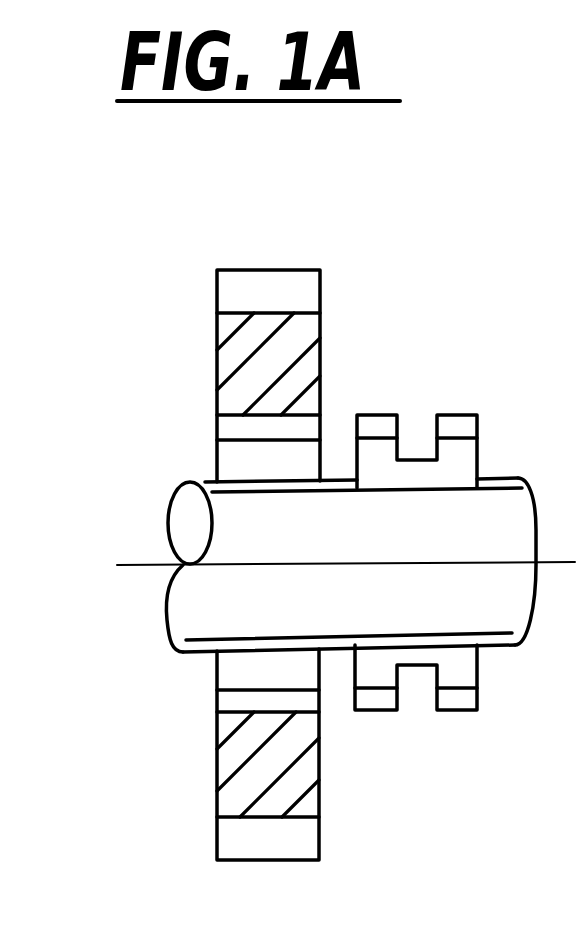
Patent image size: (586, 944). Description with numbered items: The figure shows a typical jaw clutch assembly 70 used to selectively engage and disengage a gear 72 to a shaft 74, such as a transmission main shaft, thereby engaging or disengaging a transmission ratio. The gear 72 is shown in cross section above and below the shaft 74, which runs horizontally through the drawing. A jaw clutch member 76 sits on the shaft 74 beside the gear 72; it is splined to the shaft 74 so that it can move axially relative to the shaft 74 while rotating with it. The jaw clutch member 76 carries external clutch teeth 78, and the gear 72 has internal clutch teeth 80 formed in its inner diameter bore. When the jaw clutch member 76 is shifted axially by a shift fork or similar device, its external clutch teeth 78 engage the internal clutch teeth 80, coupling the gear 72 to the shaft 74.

The jaw clutch assembly 70 is at (398, 218).
The gear 72 is at (232, 350).
The shaft 74 is at (238, 605).
The jaw clutch member 76 is at (455, 458).
The external clutch teeth 78 is at (377, 427).
The internal clutch teeth 80 is at (233, 428).